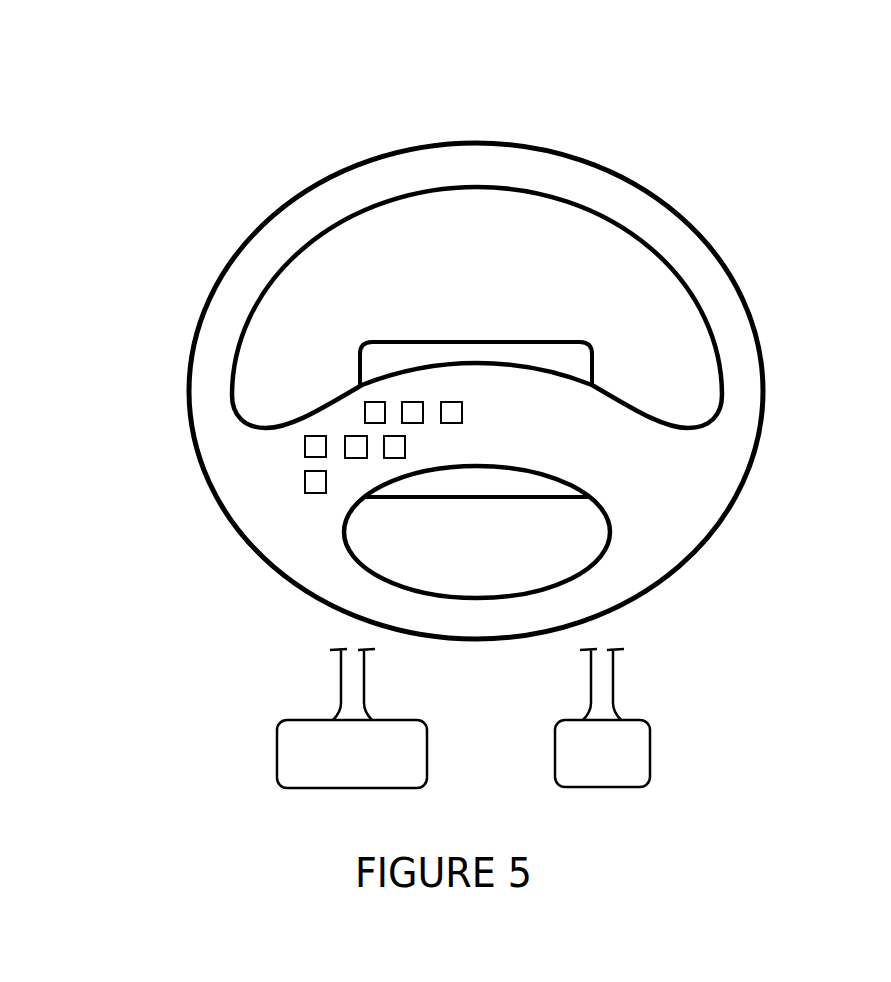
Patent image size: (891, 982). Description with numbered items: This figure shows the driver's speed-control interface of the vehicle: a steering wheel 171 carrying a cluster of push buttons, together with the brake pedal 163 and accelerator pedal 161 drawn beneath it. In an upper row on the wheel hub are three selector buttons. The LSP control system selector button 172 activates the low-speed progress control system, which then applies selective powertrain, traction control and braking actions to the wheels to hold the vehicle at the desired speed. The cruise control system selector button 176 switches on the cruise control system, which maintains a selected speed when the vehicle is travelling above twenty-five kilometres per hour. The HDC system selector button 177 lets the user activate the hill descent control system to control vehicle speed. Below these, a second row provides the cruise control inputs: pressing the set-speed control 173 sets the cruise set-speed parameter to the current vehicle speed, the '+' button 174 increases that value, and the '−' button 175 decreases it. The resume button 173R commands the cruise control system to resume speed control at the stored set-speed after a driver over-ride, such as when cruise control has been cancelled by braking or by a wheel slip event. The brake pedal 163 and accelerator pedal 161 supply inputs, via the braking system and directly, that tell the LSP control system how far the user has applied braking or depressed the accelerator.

The steering wheel 171 is at (733, 342).
The LSP control system selector button 172 is at (377, 402).
The cruise control system selector button 176 is at (416, 402).
The HDC system selector button 177 is at (452, 402).
The set-speed control 173 is at (344, 437).
The resume button 173R is at (394, 458).
The '+' button 174 is at (305, 447).
The '−' button 175 is at (305, 484).
The brake pedal 163 is at (293, 747).
The accelerator pedal 161 is at (630, 747).